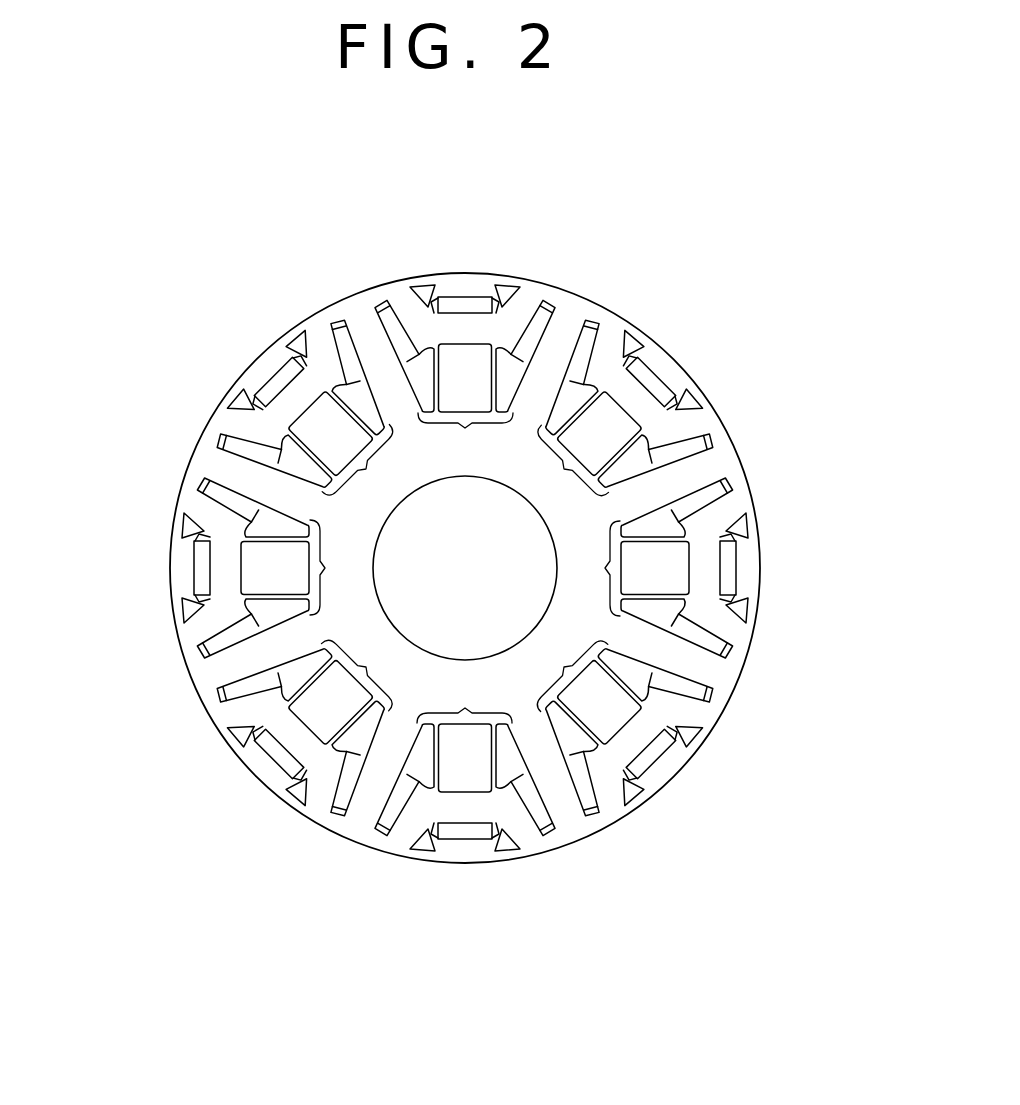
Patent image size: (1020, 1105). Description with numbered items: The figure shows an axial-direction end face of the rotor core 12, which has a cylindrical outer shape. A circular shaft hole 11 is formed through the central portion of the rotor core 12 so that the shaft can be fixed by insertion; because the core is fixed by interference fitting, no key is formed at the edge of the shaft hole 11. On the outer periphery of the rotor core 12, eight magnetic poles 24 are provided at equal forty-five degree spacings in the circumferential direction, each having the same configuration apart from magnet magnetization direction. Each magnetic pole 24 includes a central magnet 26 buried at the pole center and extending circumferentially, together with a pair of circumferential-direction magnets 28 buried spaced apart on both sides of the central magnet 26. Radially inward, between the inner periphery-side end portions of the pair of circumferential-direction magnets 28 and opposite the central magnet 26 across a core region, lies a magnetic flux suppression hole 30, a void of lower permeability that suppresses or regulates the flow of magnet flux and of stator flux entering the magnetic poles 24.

The shaft hole 11 is at (484, 585).
The rotor core 12 is at (590, 283).
The magnetic pole 24 is at (463, 571).
The central magnet 26 is at (453, 297).
The circumferential-direction magnet 28 is at (467, 570).
The magnetic flux suppression hole 30 is at (465, 568).